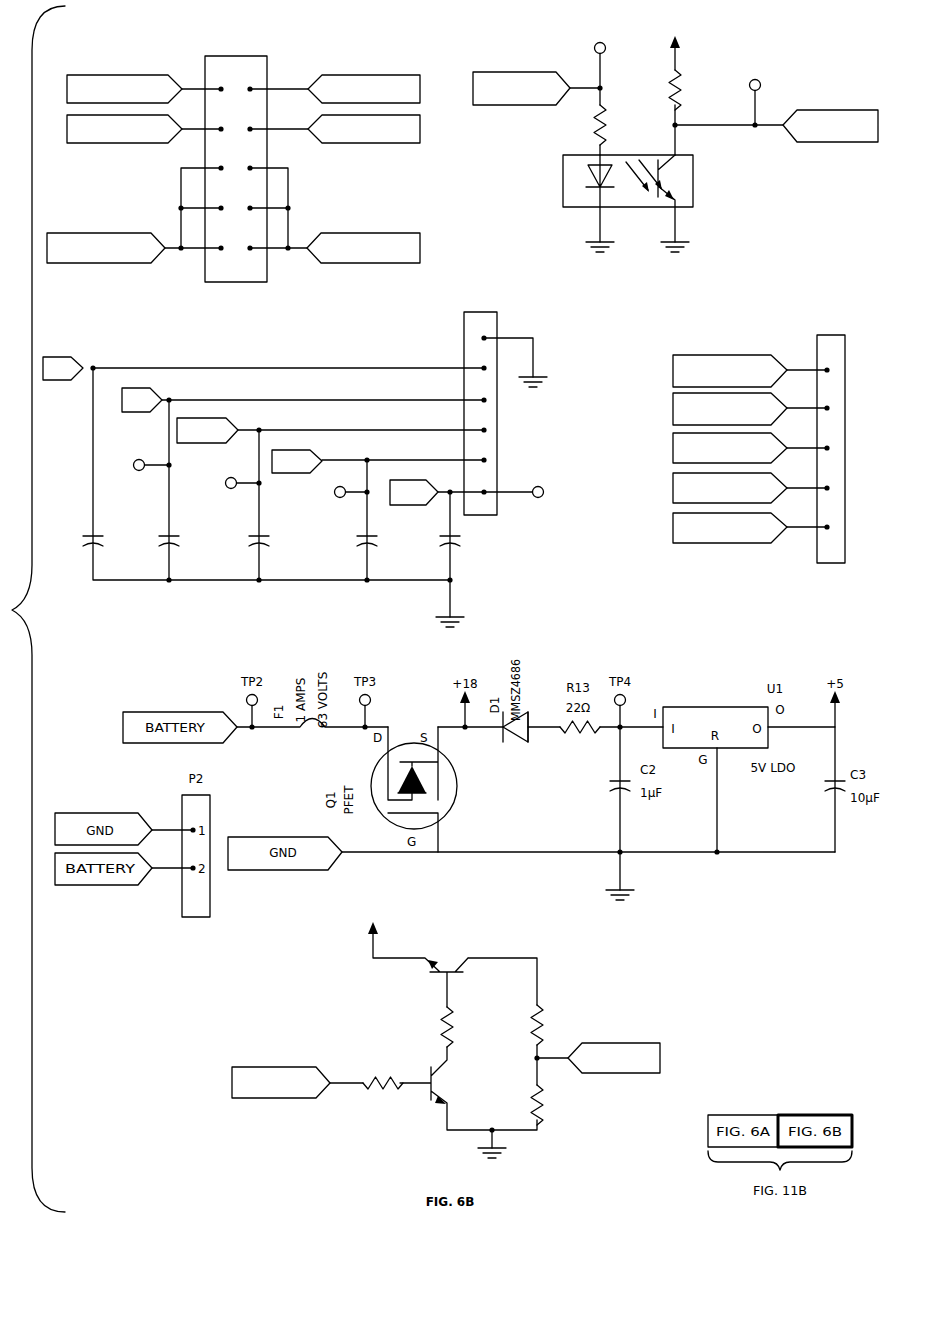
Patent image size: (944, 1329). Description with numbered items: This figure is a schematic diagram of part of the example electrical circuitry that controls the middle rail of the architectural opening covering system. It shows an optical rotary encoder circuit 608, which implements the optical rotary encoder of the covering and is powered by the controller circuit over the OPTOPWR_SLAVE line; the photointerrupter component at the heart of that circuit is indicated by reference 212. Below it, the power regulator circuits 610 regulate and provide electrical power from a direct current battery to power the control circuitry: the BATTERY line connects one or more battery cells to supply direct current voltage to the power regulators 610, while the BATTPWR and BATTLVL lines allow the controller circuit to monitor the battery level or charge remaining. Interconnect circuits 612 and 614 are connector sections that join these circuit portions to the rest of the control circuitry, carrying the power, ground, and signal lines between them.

The power regulator circuits 610 is at (329, 61).
The optical rotary encoder circuit 608 is at (675, 136).
The optical sensor (photointerrupter U3) 212 is at (739, 214).
The interconnect circuit 612 is at (518, 320).
The interconnect circuit 614 is at (795, 304).